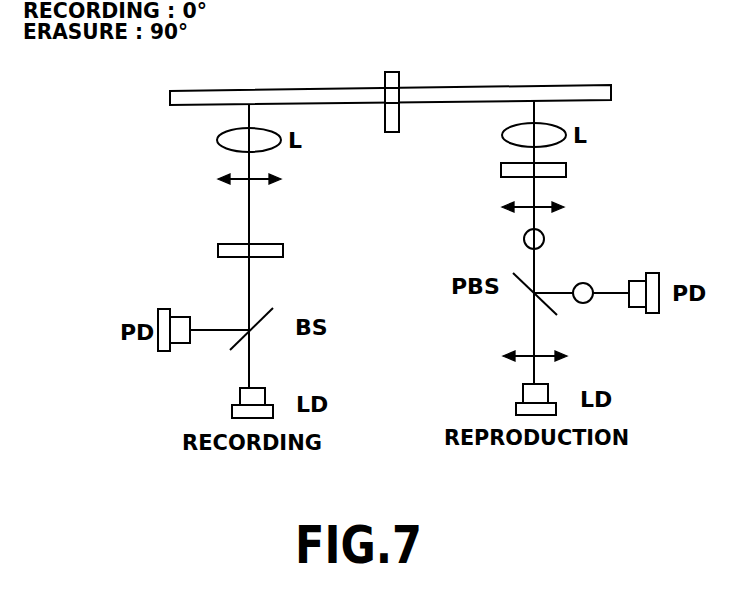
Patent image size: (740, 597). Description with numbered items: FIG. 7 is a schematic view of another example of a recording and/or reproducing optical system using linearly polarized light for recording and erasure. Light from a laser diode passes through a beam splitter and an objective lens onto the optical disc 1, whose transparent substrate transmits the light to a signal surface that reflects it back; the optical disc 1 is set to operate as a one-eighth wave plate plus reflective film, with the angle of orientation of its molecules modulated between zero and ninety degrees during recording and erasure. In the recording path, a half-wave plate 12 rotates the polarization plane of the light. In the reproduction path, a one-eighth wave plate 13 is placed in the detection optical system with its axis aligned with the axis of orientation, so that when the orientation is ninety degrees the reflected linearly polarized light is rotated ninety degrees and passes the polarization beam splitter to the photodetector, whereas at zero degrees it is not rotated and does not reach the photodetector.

The optical disc 1 is at (540, 92).
The λ/2 plate 12 is at (283, 248).
The λ/8 plate 13 is at (566, 167).